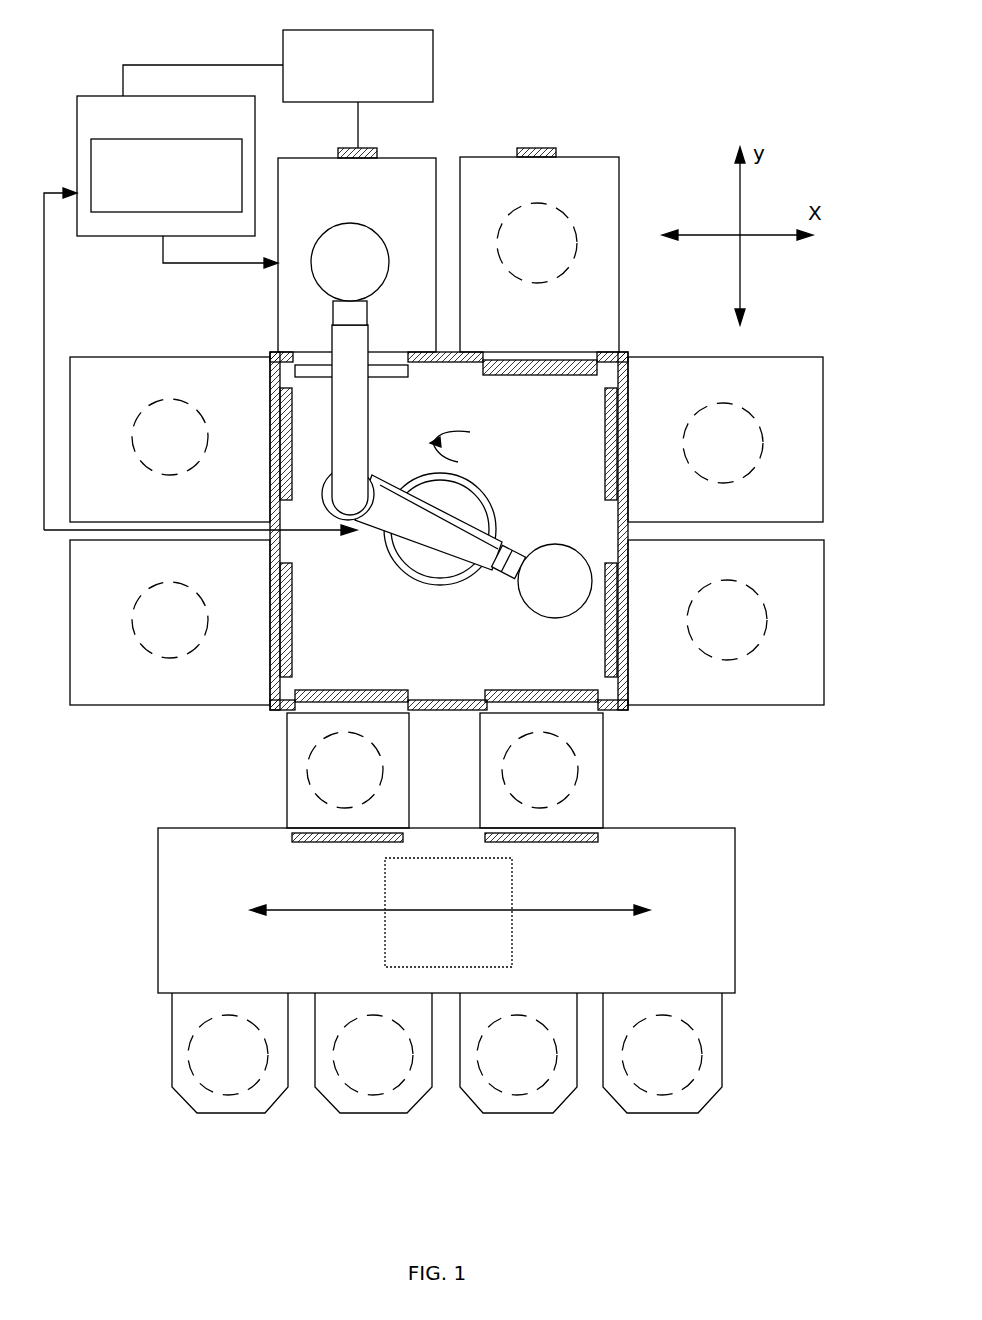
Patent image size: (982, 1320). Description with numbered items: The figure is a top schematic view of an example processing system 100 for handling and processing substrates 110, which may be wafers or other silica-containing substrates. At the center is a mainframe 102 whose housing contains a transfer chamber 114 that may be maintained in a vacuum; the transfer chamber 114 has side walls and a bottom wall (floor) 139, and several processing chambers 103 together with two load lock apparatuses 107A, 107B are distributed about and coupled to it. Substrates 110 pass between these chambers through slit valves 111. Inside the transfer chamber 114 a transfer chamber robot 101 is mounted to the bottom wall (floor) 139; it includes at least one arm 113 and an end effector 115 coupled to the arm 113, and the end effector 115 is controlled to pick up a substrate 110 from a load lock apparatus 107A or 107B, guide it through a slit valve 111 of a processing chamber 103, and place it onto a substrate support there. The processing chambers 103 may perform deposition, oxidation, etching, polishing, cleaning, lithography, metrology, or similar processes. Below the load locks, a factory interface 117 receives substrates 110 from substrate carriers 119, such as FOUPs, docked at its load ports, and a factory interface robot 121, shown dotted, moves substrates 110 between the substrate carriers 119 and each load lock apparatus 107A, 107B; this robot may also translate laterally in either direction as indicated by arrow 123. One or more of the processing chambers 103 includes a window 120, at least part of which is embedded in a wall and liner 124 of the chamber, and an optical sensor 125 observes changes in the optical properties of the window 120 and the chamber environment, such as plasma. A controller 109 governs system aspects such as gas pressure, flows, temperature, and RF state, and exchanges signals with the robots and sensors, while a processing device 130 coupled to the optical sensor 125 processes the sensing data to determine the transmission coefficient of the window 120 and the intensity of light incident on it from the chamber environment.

The processing system 100 is at (555, 110).
The transfer chamber robot 101 is at (383, 577).
The mainframe 102 is at (258, 728).
The processing chamber 103 is at (447, 431).
The load lock apparatus 107A is at (285, 777).
The load lock apparatus 107B is at (603, 775).
The controller 109 is at (161, 313).
The substrate 110 is at (518, 627).
The slit valve 111 is at (277, 437).
The arm 113 is at (414, 490).
The transfer chamber 114 is at (449, 531).
The end effector 115 is at (337, 313).
The factory interface 117 is at (750, 910).
The substrate carrier 119 is at (228, 1113).
The window 120 is at (353, 147).
The factory interface robot 121 is at (513, 930).
The arrow 123 is at (320, 912).
The wall and liner 124 is at (430, 172).
The optical sensor 125 is at (278, 89).
The processing device 130 is at (166, 175).
The bottom wall (floor) 139 is at (476, 441).